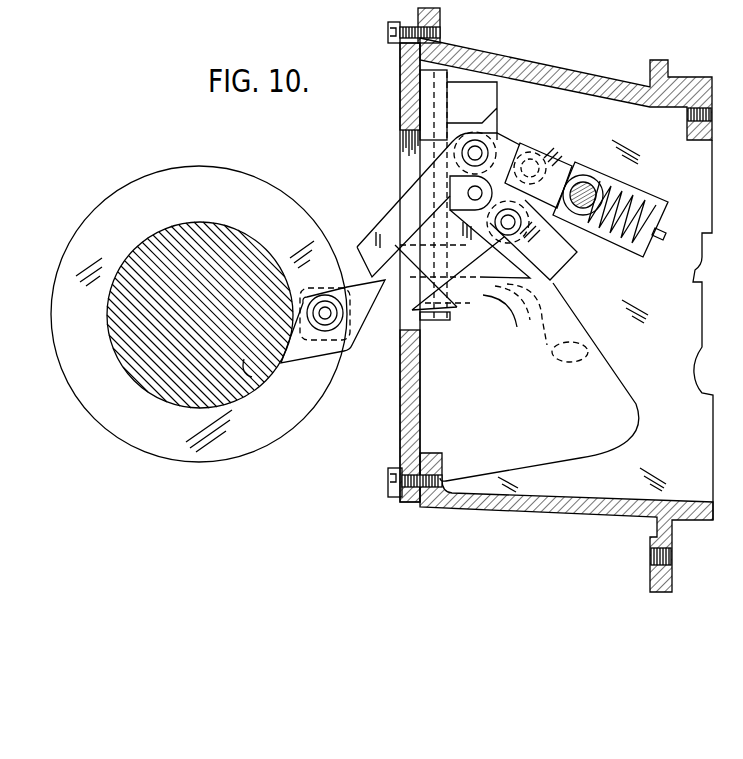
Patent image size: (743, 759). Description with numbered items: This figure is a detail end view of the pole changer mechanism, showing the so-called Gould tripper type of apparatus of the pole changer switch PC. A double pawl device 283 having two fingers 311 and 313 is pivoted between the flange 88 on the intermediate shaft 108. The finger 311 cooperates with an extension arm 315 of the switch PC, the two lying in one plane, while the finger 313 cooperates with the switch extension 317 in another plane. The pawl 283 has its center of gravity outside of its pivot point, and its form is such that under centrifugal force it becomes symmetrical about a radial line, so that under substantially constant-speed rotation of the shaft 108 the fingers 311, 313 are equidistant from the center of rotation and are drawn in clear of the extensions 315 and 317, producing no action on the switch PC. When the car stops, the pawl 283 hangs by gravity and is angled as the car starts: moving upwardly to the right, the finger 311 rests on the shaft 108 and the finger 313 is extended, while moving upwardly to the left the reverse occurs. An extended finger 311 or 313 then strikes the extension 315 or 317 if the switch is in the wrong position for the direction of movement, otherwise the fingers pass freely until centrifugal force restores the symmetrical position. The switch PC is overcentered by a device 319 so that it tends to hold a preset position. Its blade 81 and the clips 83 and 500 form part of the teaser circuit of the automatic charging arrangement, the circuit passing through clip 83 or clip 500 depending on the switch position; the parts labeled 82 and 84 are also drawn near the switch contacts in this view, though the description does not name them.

The flange 88 is at (128, 200).
The intermediate shaft 108 is at (250, 368).
The finger 313 is at (380, 296).
The finger 311 is at (292, 360).
The pawl device 283 is at (341, 352).
The extension arm 317 is at (367, 247).
The extension arm 315 is at (455, 306).
The clip 500 is at (478, 103).
The overcentering device 319 is at (574, 162).
The blade 81 is at (560, 258).
The passage 82 is at (531, 302).
The clip 83 is at (546, 348).
The port 84 is at (547, 346).
The pole changer switch PC is at (493, 337).